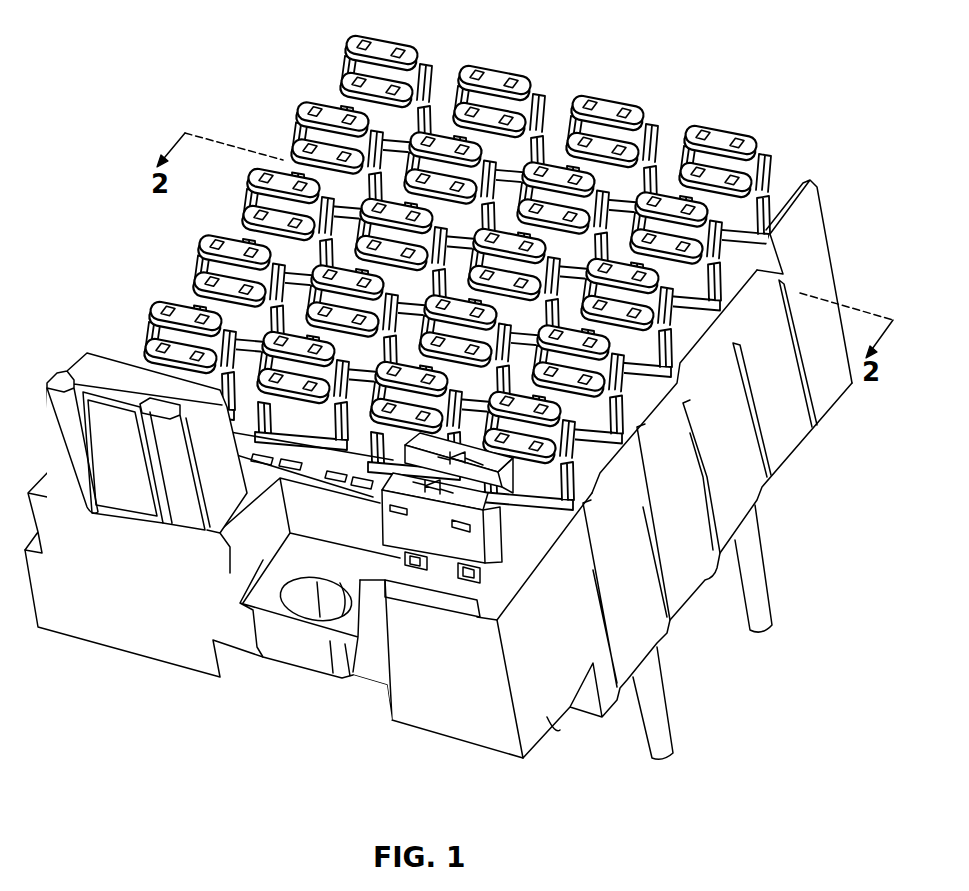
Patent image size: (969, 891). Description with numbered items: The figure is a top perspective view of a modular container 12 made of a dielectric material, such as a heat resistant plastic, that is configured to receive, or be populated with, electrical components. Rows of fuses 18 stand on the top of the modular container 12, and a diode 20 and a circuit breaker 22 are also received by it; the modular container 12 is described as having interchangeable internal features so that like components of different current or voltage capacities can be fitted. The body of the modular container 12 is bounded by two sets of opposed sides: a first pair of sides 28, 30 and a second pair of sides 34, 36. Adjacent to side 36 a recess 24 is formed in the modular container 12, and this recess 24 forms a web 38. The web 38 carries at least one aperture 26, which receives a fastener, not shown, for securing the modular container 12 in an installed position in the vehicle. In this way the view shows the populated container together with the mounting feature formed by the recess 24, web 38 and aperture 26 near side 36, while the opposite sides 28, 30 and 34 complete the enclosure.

The modular container 12 is at (812, 222).
The fuses 18 is at (380, 38).
The diodes 20 is at (440, 542).
The circuit breakers 22 is at (83, 368).
The recess 24 is at (243, 572).
The aperture 26 is at (297, 598).
The side 28 is at (790, 449).
The side 30 is at (33, 620).
The side 34 is at (838, 265).
The side 36 is at (115, 640).
The web 38 is at (300, 672).